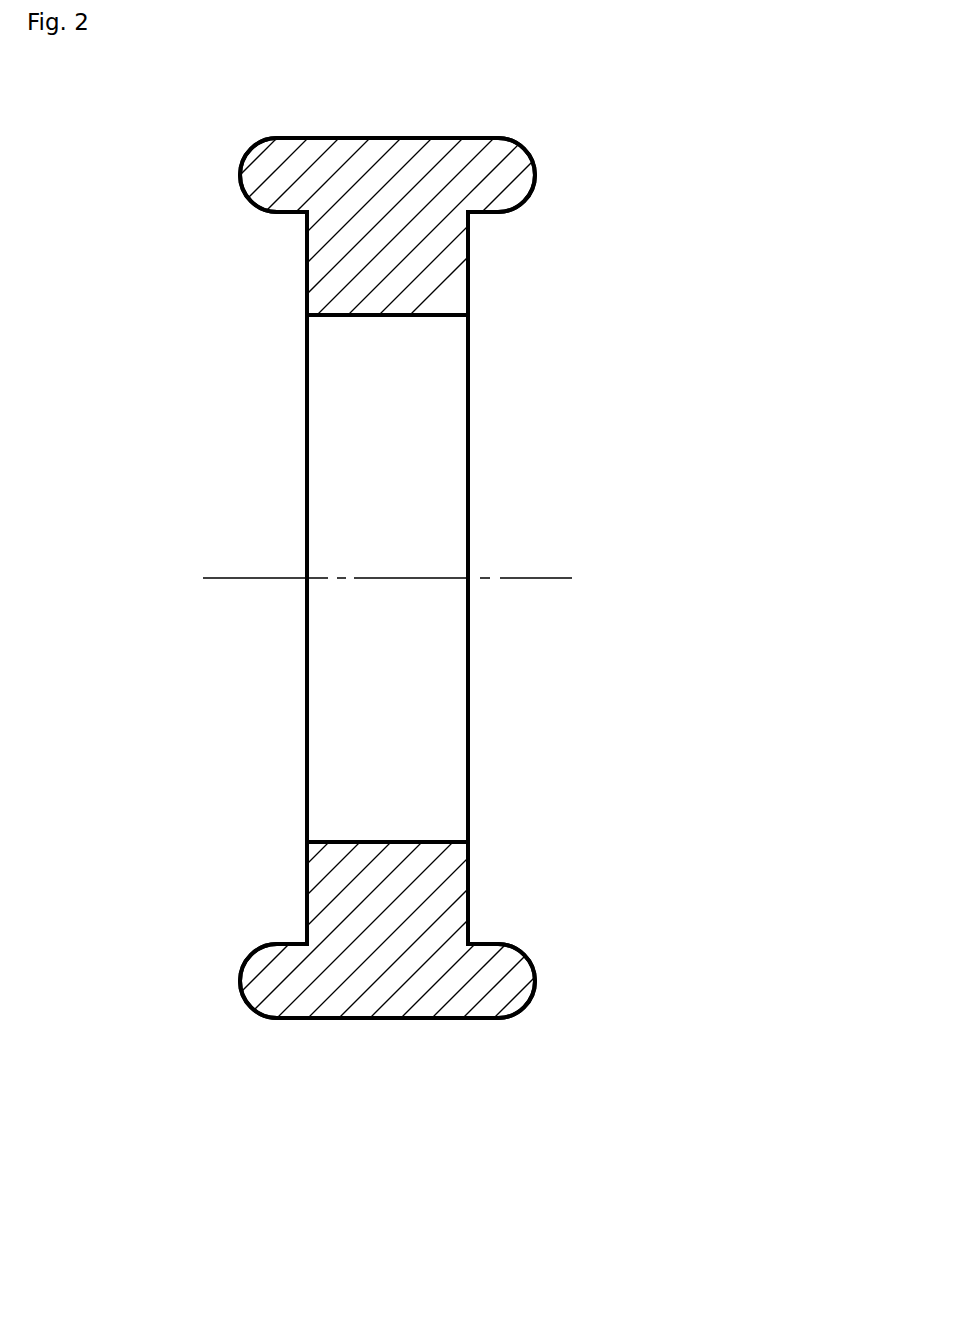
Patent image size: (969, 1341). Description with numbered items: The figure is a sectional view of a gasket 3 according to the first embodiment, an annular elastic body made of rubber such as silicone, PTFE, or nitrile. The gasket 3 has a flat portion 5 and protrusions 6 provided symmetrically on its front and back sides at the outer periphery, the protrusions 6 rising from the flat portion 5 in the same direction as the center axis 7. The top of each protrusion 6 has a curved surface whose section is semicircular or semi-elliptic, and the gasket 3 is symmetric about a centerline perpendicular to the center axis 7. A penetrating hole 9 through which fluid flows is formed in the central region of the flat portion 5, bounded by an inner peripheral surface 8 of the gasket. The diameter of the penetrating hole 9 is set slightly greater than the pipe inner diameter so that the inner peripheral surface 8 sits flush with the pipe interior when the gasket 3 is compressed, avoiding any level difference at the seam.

The gasket 3 is at (387, 697).
The flat portion 5 is at (385, 578).
The protrusion 6 is at (388, 608).
The center axis 7 is at (420, 661).
The inner peripheral surface 8 is at (475, 423).
The penetrating hole 9 is at (196, 578).